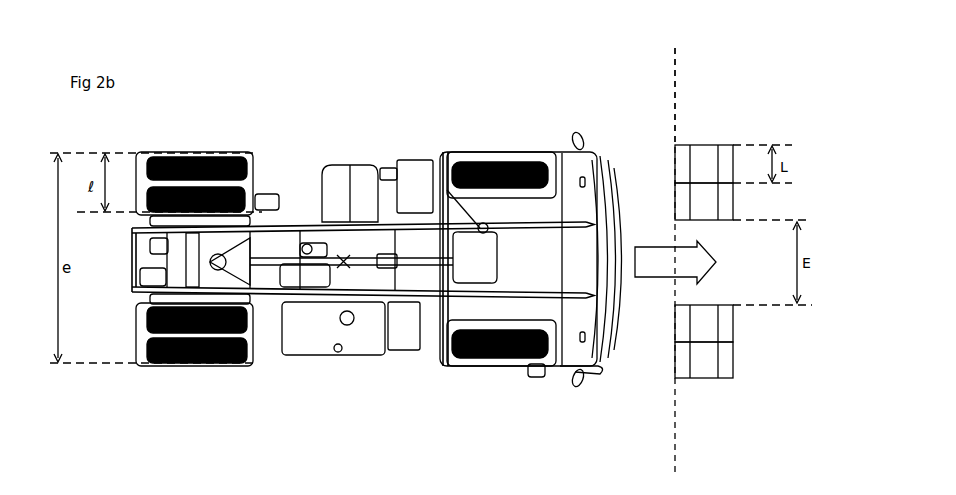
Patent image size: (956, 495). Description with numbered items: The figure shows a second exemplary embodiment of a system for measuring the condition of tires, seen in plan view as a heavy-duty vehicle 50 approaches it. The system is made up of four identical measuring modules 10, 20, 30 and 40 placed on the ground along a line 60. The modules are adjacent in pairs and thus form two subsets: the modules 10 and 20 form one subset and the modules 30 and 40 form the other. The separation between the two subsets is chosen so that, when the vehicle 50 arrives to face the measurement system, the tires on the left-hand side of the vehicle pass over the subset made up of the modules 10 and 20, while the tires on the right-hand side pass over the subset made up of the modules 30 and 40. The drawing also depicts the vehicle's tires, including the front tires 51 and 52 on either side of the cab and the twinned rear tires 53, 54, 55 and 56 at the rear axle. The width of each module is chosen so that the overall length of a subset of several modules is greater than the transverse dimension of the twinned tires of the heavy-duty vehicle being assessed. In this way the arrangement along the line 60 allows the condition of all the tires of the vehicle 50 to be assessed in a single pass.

The module 10 is at (700, 160).
The module 20 is at (698, 205).
The module 30 is at (708, 322).
The module 40 is at (698, 370).
The vehicle of the heavy duty type 50 is at (372, 247).
The front wheel 51 is at (524, 160).
The front wheel 52 is at (518, 362).
The rear wheel 53 is at (248, 168).
The rear wheel 54 is at (246, 200).
The rear wheel 55 is at (243, 322).
The rear wheel 56 is at (220, 367).
The line 60 is at (680, 88).